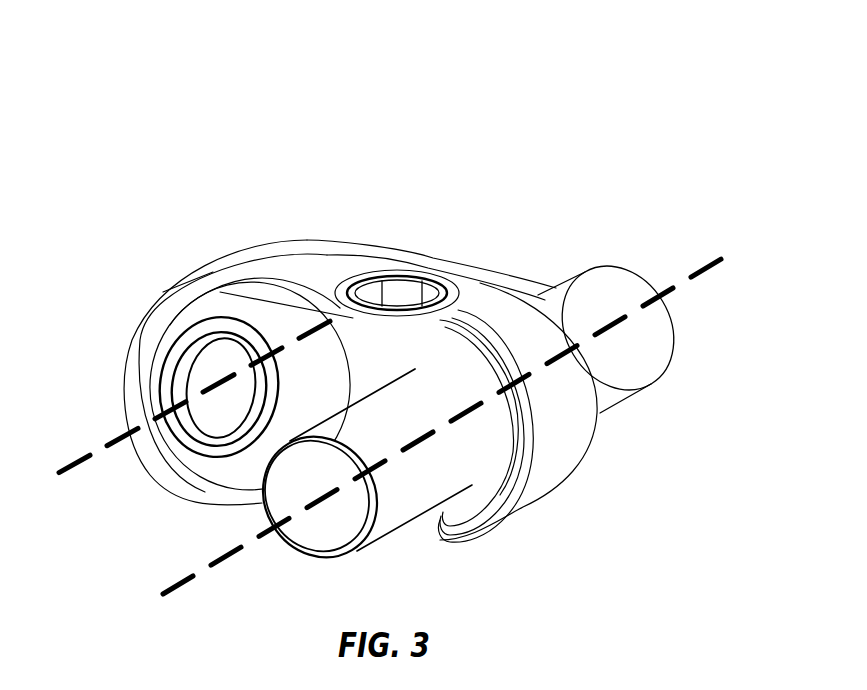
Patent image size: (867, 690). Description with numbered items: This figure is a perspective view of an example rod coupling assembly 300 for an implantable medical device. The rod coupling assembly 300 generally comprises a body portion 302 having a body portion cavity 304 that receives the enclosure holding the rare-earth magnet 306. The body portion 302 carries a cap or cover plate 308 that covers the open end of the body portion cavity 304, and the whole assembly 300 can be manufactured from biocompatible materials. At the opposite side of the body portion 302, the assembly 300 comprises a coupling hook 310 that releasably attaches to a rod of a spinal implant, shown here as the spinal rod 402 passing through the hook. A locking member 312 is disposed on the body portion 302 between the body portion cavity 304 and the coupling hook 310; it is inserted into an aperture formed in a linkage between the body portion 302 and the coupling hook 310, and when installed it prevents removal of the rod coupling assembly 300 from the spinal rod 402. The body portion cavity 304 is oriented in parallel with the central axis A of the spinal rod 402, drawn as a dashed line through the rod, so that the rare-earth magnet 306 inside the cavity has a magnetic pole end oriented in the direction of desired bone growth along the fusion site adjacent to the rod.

The rod coupling assembly 300 is at (458, 63).
The body portion 302 is at (337, 207).
The body portion cavity 304 is at (156, 331).
The rare-earth magnet 306 is at (277, 337).
The cover plate 308 is at (250, 421).
The coupling hook 310 is at (546, 402).
The locking member 312 is at (400, 290).
The spinal rod 402 is at (637, 375).
The central axis A is at (663, 292).